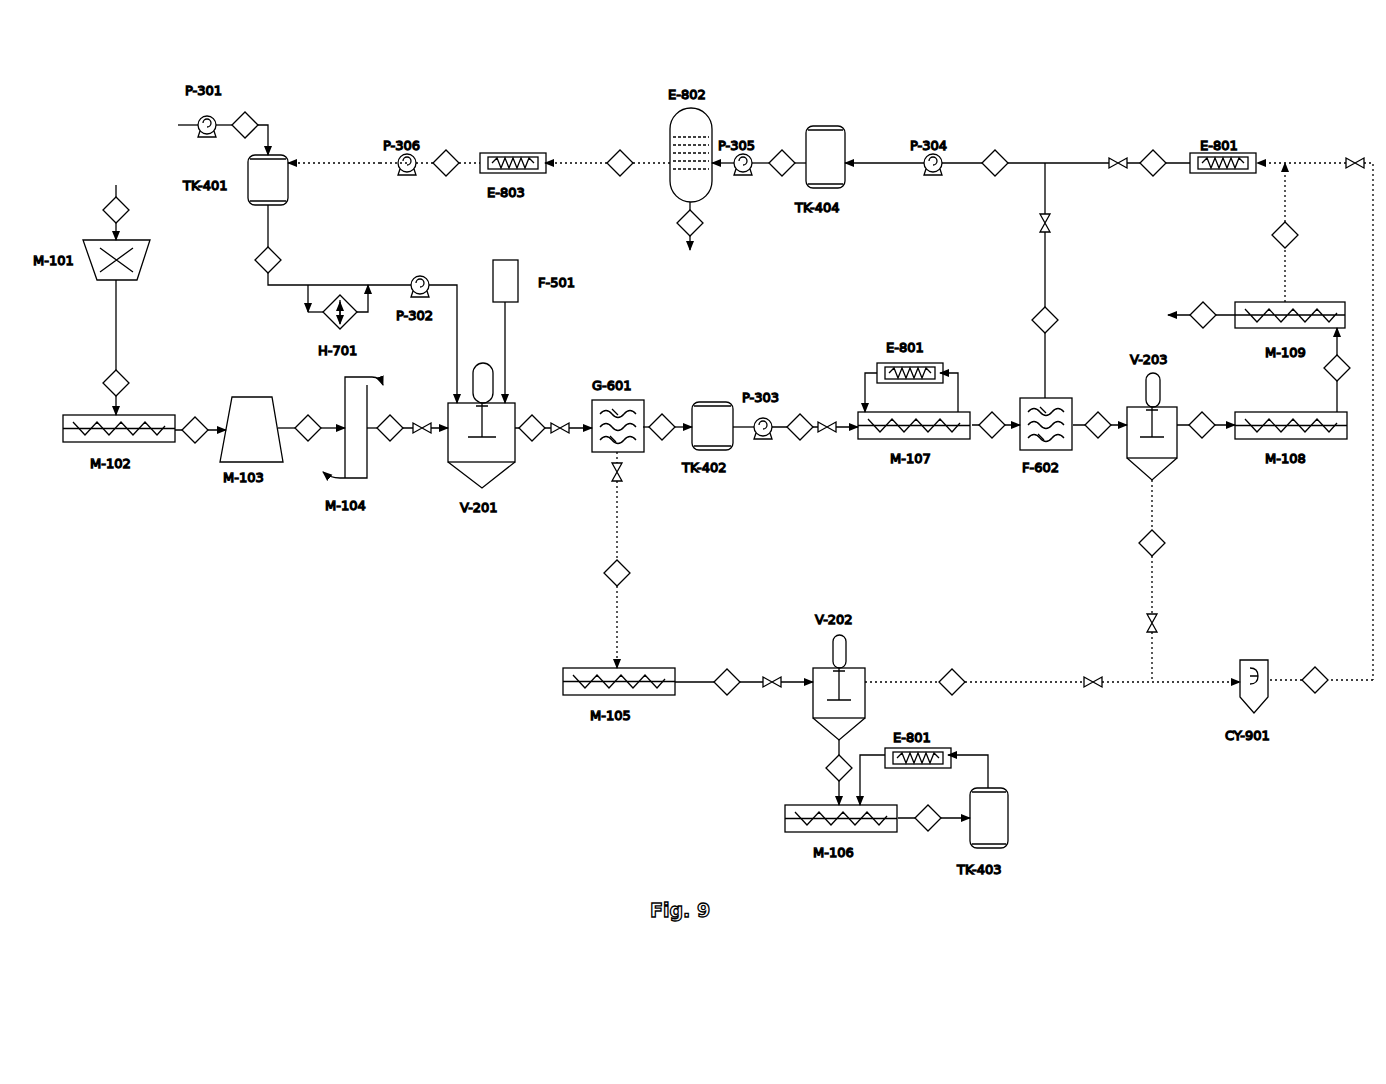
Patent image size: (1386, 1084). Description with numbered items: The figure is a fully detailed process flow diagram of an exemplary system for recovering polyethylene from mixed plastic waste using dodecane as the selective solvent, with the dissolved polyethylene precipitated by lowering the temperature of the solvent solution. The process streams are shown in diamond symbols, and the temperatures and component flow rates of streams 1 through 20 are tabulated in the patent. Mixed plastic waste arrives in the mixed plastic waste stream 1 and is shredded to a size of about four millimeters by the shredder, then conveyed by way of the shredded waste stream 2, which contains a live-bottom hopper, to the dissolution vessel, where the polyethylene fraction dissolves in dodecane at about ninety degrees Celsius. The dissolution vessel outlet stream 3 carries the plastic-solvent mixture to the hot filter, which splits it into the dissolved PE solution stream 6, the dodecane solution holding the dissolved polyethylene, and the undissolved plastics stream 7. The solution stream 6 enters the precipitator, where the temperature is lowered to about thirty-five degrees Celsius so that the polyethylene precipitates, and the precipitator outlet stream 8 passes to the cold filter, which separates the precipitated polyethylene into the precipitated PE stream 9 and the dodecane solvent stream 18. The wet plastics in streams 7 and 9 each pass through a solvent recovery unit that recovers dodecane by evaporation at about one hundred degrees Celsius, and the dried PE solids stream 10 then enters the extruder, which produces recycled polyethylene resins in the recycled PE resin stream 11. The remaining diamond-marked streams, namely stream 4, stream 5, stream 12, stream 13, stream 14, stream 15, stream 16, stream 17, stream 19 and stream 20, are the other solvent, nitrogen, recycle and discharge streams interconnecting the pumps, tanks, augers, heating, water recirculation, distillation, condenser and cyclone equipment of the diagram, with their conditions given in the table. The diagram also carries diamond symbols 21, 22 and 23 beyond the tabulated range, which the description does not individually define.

The mixed plastic waste stream 1 is at (116, 210).
The shredded waste stream 2 is at (155, 406).
The dissolution vessel outlet stream 3 is at (420, 428).
The stream 4 is at (245, 125).
The stream 5 is at (268, 260).
The dissolved PE solution stream 6 is at (731, 427).
The undissolved plastics stream 7 is at (558, 555).
The precipitator outlet stream 8 is at (992, 425).
The precipitated PE stream 9 is at (1098, 425).
The dried PE solids stream 10 is at (1269, 396).
The recycled PE resin stream 11 is at (1203, 315).
The stream 12 is at (1285, 235).
The stream 13 is at (952, 682).
The stream 14 is at (1152, 543).
The stream 15 is at (1077, 724).
The stream 16 is at (928, 818).
The stream 17 is at (995, 163).
The dodecane solvent stream 18 is at (1045, 320).
The stream 19 is at (967, 163).
The stream 20 is at (620, 163).
The stream 21 is at (446, 163).
The heat exchanger H-701 stream 22 is at (340, 312).
The stream 23 is at (690, 223).